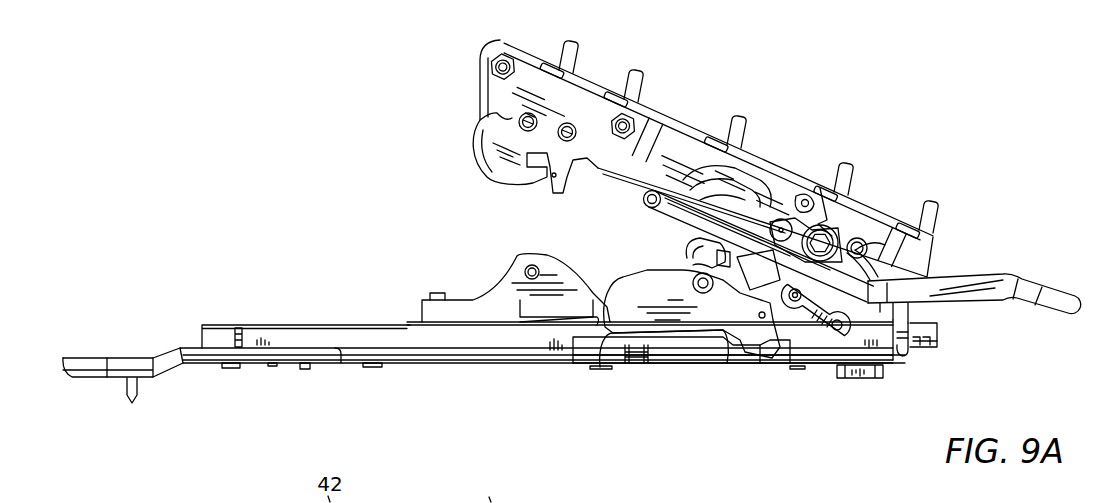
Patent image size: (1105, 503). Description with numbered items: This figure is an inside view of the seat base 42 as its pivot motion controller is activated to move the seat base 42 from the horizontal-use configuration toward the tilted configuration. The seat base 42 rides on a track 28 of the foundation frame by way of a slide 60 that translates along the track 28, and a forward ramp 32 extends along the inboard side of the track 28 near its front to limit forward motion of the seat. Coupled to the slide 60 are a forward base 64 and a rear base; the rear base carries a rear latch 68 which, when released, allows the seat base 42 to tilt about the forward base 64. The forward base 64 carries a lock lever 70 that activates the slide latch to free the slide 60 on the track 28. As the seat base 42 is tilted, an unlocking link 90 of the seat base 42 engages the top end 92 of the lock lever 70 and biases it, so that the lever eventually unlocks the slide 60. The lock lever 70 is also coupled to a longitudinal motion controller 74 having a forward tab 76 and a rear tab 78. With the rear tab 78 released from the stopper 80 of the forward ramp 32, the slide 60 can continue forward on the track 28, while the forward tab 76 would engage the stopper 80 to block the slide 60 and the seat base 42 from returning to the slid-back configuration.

The seat base 42 is at (505, 39).
The rear latch 68 is at (492, 136).
The unlocking link 90 is at (753, 268).
The top end 92 is at (690, 232).
The lock lever 70 is at (700, 265).
The longitudinal motion controller 74 is at (672, 325).
The rear tab 78 is at (612, 333).
The stopper 80 is at (636, 362).
The forward ramp 32 is at (723, 362).
The forward tab 76 is at (772, 344).
The forward base 64 is at (889, 318).
The slide 60 is at (938, 338).
The track 28 is at (448, 353).